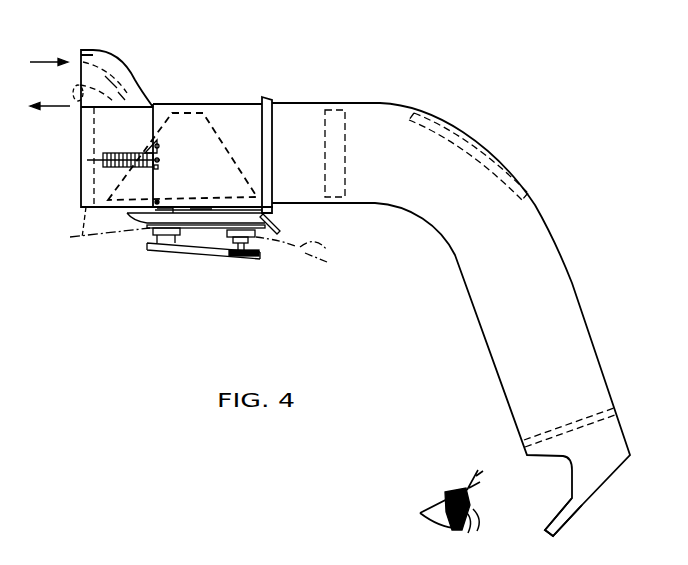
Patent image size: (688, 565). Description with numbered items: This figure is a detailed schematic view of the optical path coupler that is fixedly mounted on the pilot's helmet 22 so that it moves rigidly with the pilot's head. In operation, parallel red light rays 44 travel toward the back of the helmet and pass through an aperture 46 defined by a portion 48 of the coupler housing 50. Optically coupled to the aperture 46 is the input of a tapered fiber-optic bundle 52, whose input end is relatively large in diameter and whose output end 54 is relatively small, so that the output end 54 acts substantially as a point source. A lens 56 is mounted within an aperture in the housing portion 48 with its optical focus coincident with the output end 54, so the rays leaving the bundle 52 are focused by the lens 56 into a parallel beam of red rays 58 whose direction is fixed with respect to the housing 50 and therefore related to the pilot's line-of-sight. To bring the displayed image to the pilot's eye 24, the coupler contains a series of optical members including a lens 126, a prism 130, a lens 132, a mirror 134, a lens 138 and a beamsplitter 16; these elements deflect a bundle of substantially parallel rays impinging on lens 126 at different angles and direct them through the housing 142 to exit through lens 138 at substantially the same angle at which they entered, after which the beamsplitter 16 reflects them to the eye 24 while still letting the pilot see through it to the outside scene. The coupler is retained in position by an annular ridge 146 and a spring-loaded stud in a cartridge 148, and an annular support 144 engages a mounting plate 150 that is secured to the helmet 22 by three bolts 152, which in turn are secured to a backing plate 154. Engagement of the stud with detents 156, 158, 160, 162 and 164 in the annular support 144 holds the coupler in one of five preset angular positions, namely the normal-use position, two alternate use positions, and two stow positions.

The beamsplitter 16 is at (568, 513).
The helmet 22 is at (304, 249).
The eye of the pilot 24 is at (442, 495).
The parallel red light rays 44 is at (40, 60).
The aperture 46 is at (56, 96).
The housing portion 48 is at (88, 50).
The housing of optical coupler 50 is at (382, 99).
The tapered fiber-optic bundle 52 is at (112, 78).
The output end of fiber-optic bundle 54 is at (143, 94).
The lens 56 is at (99, 100).
The parallel beam of red rays 58 is at (53, 108).
The lens 126 is at (110, 234).
The prism 130 is at (236, 161).
The lens 132 is at (330, 103).
The mirror 134 is at (483, 140).
The lens 138 is at (577, 423).
The housing of optical coupler 142 is at (271, 99).
The annular support 144 is at (218, 103).
The annular ridge 146 is at (272, 212).
The cartridge 148 is at (147, 148).
The mounting plate 150 is at (265, 210).
The bolts 152 is at (170, 236).
The backing plate 154 is at (233, 254).
The detent 156 is at (159, 160).
The detent 158 is at (158, 168).
The detent 160 is at (159, 143).
The detent 162 is at (158, 198).
The detent 164 is at (155, 106).